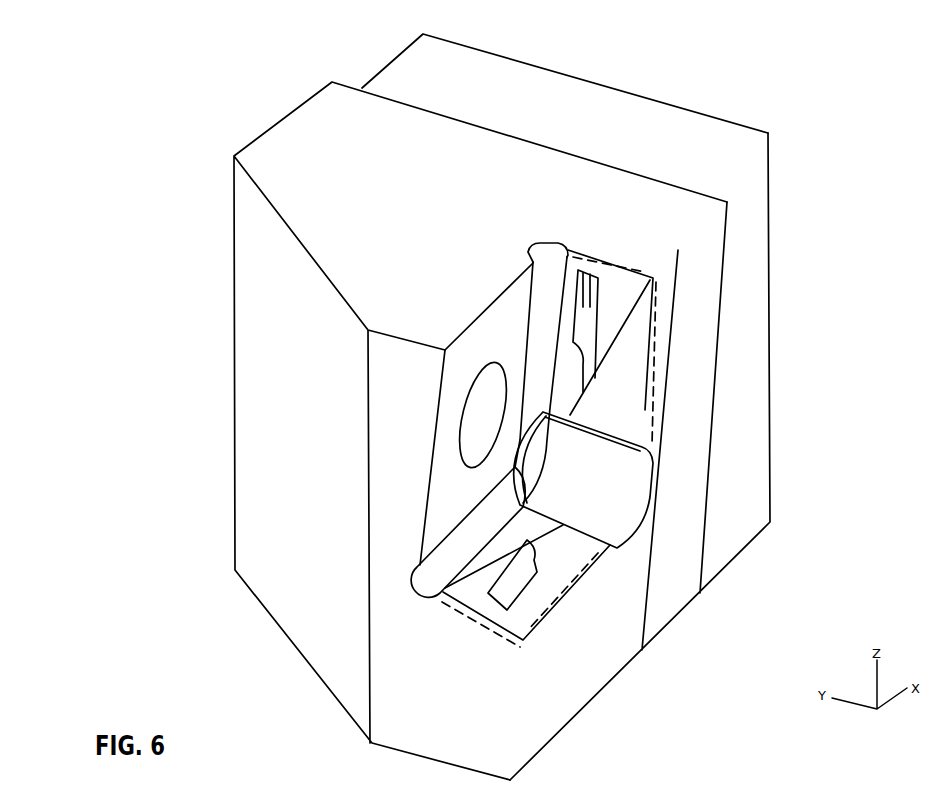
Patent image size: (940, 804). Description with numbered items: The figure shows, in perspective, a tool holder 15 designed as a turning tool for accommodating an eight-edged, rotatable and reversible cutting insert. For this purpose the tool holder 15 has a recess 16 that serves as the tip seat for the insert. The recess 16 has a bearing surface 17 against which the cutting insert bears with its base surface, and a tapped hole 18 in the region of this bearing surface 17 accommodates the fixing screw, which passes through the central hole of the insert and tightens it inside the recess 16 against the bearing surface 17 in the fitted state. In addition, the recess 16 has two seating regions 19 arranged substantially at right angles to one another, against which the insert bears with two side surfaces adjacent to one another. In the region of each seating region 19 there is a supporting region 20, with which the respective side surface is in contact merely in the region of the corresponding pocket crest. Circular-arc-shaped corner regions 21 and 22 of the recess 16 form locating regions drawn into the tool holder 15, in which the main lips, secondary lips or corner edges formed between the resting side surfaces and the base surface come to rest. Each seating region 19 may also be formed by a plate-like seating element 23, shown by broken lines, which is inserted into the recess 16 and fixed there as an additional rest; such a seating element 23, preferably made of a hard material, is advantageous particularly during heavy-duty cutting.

The tool holder 15 is at (307, 212).
The recess 16 is at (622, 387).
The bearing surface 17 is at (487, 335).
The tapped hole 18 is at (473, 425).
The seating region 19 is at (618, 295).
The supporting region 20 is at (583, 300).
The corner region 21 is at (547, 258).
The corner region 22 is at (620, 505).
The seating element 23 is at (655, 325).